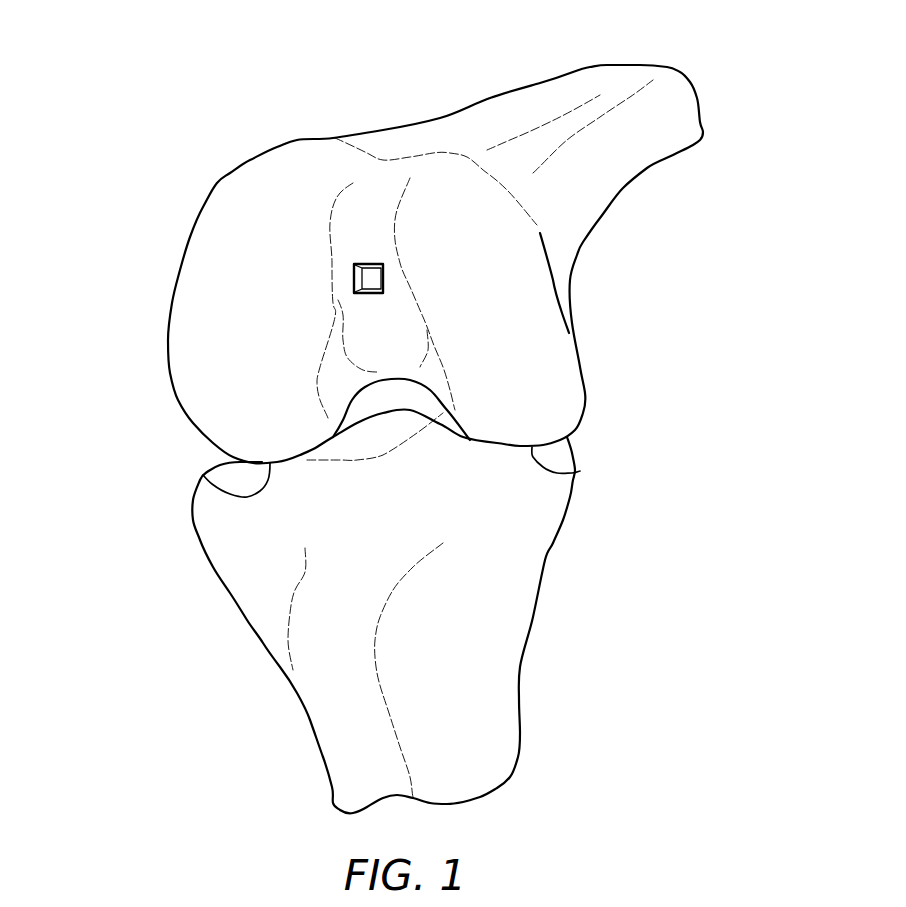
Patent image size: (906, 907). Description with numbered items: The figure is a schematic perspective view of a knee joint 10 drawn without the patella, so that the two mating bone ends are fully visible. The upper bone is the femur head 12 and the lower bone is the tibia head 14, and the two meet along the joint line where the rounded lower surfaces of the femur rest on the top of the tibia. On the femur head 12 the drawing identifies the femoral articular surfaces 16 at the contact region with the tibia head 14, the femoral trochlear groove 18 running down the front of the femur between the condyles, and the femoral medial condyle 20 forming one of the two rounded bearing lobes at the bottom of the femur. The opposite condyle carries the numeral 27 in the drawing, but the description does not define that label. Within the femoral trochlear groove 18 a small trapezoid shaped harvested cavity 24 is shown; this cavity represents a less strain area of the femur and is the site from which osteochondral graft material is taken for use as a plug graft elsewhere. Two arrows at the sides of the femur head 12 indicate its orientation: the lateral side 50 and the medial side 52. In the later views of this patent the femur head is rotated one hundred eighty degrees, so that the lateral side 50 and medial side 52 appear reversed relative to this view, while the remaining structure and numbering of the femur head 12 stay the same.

The knee joint 10 is at (663, 329).
The femur head 12 is at (220, 183).
The tibia head 14 is at (210, 523).
The femoral articular surfaces 16 is at (250, 498).
The femoral trochlear groove 18 is at (375, 223).
The femoral medial condyle 20 is at (213, 327).
The harvested cavity 24 is at (367, 275).
The medial condyle 27 is at (533, 387).
The lateral side 50 is at (673, 393).
The medial side 52 is at (133, 393).